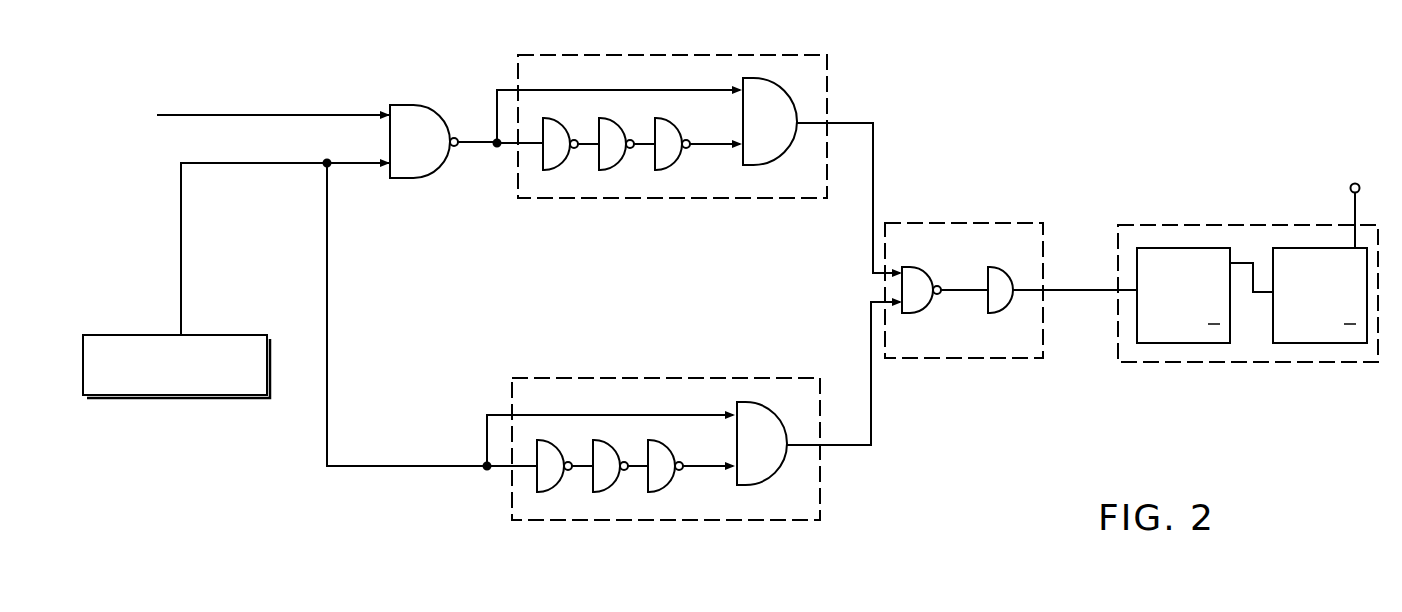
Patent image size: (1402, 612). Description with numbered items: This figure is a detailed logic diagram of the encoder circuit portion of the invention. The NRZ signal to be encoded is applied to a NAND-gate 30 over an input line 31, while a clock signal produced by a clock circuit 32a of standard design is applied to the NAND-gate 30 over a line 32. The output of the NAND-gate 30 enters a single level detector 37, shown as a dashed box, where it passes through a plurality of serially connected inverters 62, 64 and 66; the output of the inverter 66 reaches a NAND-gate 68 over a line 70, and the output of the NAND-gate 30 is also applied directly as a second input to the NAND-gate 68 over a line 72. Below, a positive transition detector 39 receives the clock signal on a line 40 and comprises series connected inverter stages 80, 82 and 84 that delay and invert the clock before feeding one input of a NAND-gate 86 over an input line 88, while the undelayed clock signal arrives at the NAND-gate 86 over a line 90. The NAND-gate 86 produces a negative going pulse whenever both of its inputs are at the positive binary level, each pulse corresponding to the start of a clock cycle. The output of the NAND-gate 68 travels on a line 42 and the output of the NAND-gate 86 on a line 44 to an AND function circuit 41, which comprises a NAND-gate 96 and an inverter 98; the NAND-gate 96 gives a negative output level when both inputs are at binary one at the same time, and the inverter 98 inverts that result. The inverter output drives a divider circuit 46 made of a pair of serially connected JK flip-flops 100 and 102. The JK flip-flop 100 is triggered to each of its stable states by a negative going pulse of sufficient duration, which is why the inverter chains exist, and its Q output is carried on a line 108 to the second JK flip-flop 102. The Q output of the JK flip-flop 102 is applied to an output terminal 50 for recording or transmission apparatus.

The NAND-gate 30 is at (443, 127).
The input line 31 is at (273, 96).
The line 32 is at (285, 234).
The clock circuit 32a is at (170, 346).
The single level detector 37 is at (662, 103).
The positive transition detector 39 is at (666, 424).
The line 40 is at (420, 331).
The AND function circuit 41 is at (964, 262).
The line 42 is at (849, 183).
The line 44 is at (844, 391).
The divider circuit 46 is at (1245, 270).
The output terminal 50 is at (1325, 211).
The inverter 62 is at (550, 156).
The inverter 64 is at (606, 156).
The inverter 66 is at (662, 156).
The NAND-gate 68 is at (761, 136).
The line 70 is at (716, 129).
The line 72 is at (618, 108).
The inverter stage 80 is at (544, 477).
The inverter stage 82 is at (600, 477).
The inverter stage 84 is at (655, 477).
The NAND-gate 86 is at (768, 437).
The input line 88 is at (709, 452).
The line 90 is at (611, 429).
The NAND-gate 96 is at (945, 308).
The inverter 98 is at (1057, 308).
The JK flip-flop 100 is at (1180, 306).
The JK flip-flop 102 is at (1312, 306).
The line 108 is at (1251, 261).